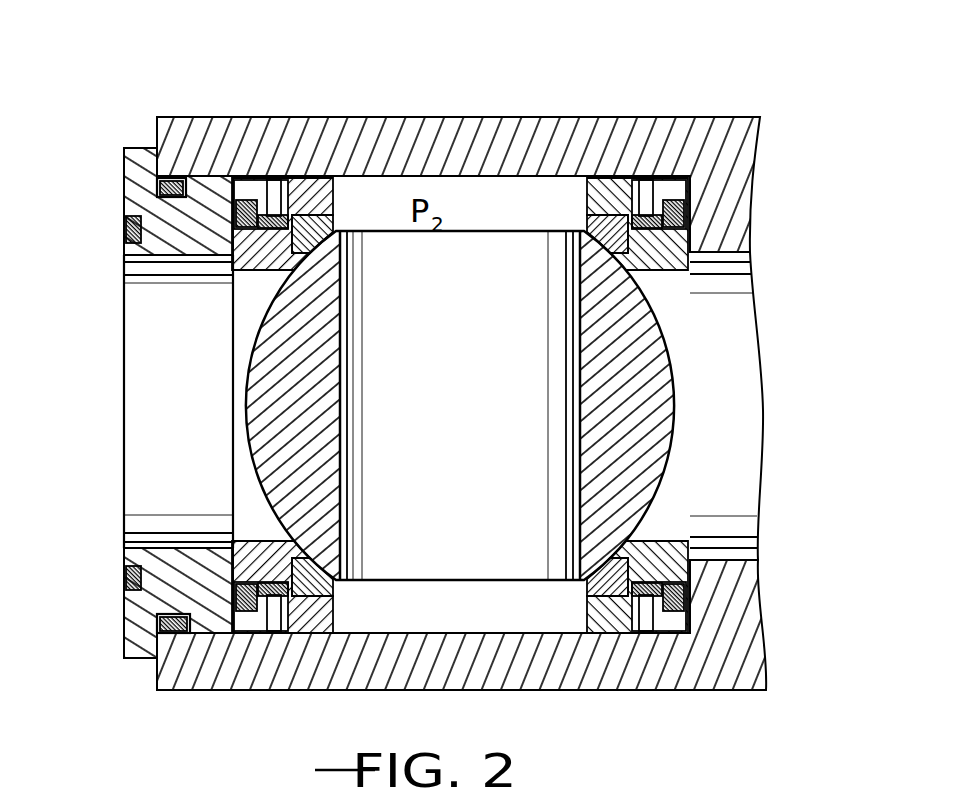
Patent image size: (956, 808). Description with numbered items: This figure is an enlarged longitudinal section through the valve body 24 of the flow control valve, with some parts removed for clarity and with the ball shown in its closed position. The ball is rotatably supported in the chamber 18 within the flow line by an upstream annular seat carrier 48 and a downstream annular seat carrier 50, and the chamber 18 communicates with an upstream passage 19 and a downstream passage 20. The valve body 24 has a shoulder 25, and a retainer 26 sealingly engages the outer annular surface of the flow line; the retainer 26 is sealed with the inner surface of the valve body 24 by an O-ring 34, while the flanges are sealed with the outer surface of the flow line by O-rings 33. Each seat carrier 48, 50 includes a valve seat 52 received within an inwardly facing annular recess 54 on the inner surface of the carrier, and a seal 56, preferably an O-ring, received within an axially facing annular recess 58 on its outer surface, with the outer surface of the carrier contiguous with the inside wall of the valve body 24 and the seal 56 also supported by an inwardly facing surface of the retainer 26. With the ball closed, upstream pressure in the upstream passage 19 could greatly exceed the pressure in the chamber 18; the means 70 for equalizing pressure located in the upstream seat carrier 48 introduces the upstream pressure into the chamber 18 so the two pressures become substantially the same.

The chamber 18 is at (503, 216).
The upstream passage 19 is at (143, 443).
The downstream passage 20 is at (763, 398).
The valve body 24 is at (492, 138).
The shoulder 25 is at (752, 242).
The retainer 26 is at (127, 650).
The O-rings 33 is at (127, 230).
The O-ring 34 is at (160, 186).
The upstream annular seat carrier 48 is at (318, 215).
The downstream annular seat carrier 50 is at (642, 190).
The valve seat 52 is at (340, 236).
The inwardly facing annular recess 54 is at (290, 268).
The seal 56 is at (262, 212).
The axially facing annular recess 58 is at (246, 198).
The means for equalizing the pressure 70 is at (275, 195).